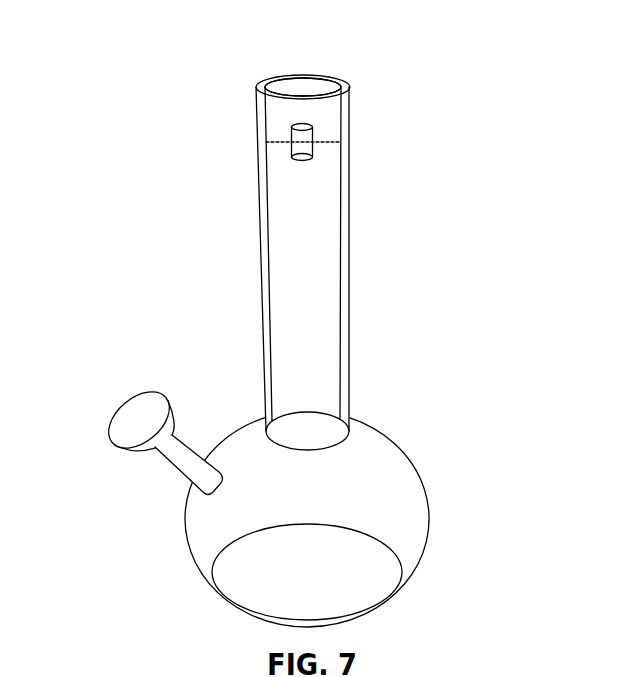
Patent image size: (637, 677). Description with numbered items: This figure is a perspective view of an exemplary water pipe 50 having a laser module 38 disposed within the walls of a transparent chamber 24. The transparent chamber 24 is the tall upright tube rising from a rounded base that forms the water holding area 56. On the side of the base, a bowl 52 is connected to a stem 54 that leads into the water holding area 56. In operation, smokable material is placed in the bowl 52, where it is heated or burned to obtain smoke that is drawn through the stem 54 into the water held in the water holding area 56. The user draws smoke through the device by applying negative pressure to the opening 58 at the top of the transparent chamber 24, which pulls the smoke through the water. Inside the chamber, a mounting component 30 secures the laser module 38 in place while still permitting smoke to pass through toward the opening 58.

The water pipe 50 is at (186, 124).
The transparent chamber 24 is at (317, 247).
The mounting component 30 is at (276, 142).
The laser module 38 is at (308, 137).
The bowl 52 is at (138, 422).
The stem 54 is at (188, 471).
The water holding area 56 is at (408, 533).
The opening 58 is at (302, 70).